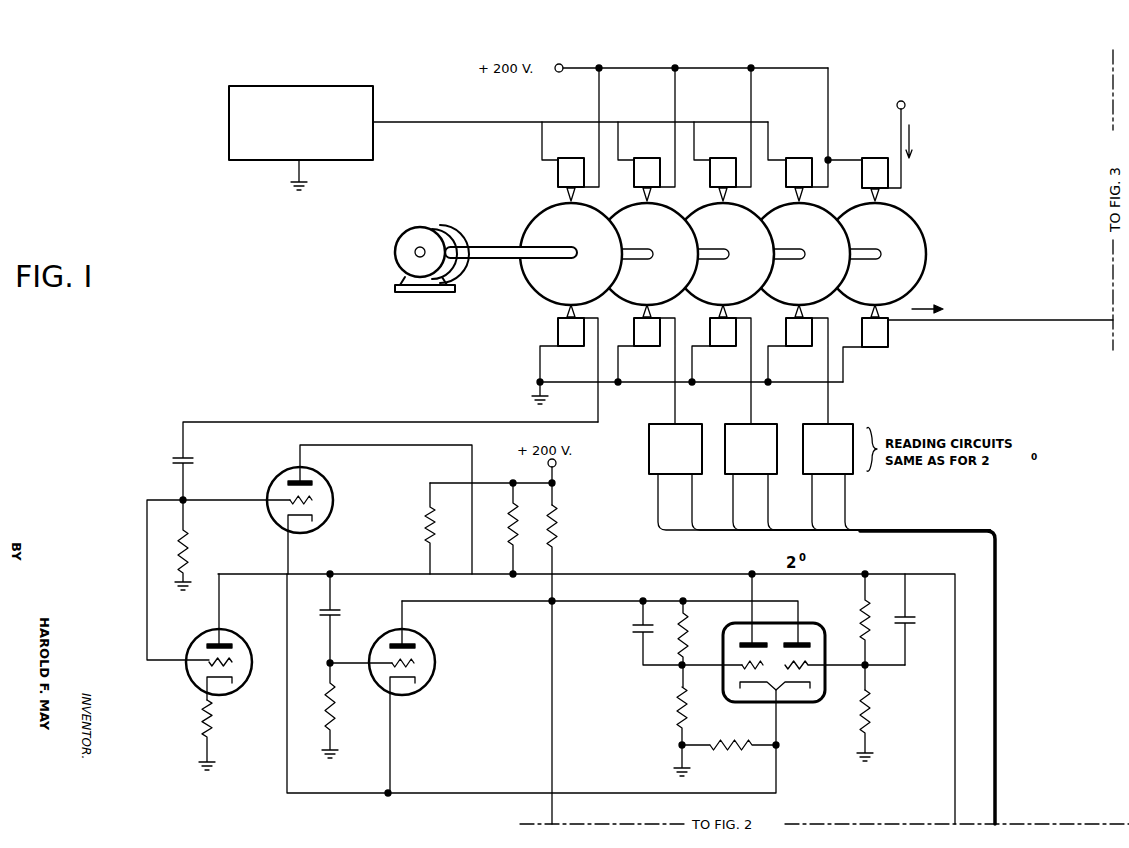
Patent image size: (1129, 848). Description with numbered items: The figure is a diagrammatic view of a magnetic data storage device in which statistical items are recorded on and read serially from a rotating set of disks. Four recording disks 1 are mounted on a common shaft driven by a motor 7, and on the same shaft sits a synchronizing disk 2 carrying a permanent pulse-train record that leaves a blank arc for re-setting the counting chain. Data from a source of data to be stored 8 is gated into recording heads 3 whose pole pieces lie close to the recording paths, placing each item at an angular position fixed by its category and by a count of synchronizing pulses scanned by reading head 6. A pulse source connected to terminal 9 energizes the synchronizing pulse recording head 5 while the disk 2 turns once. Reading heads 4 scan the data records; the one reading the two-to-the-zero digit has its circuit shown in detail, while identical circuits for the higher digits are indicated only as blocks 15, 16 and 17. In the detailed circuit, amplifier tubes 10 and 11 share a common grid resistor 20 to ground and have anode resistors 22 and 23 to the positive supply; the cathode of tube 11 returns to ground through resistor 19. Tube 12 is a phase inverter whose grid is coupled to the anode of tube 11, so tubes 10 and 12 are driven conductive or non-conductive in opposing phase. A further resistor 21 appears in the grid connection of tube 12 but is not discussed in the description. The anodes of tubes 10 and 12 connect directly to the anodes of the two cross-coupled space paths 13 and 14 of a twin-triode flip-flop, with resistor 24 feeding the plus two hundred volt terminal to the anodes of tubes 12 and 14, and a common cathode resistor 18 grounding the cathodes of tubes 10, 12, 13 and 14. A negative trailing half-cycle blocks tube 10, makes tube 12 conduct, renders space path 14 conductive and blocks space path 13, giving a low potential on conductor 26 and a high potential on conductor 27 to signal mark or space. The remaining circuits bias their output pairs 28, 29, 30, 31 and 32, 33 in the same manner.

The recording disks 1 is at (549, 212).
The synchronizing disk 2 is at (860, 212).
The recording heads 3 is at (571, 157).
The reading heads 4 is at (579, 348).
The synchronizing pulse recording head 5 is at (875, 157).
The synchronizing reading head 6 is at (883, 348).
The motor 7 is at (410, 236).
The source of data to be stored 8 is at (229, 113).
The terminal 9 is at (897, 103).
The amplifier tube 10 is at (286, 470).
The amplifier tube 11 is at (200, 636).
The phase inverter tube 12 is at (420, 640).
The space path of twin triode 13 is at (733, 659).
The space path of twin triode 14 is at (815, 657).
The reading circuit block 15 is at (665, 420).
The reading circuit block 16 is at (741, 420).
The reading circuit block 17 is at (819, 420).
The common cathode resistor 18 is at (744, 737).
The cathode resistor 19 is at (201, 715).
The common grid resistor 20 is at (189, 539).
The resistor 21 is at (338, 717).
The anode resistor 22 is at (508, 534).
The anode resistor 23 is at (426, 527).
The anode resistor 24 is at (557, 535).
The output conductor 26 is at (551, 710).
The output conductor 27 is at (954, 710).
The output conductor 28 is at (657, 496).
The output conductor 29 is at (691, 496).
The output conductor 30 is at (732, 496).
The output conductor 31 is at (767, 496).
The output conductor 32 is at (811, 496).
The output conductor 33 is at (844, 496).